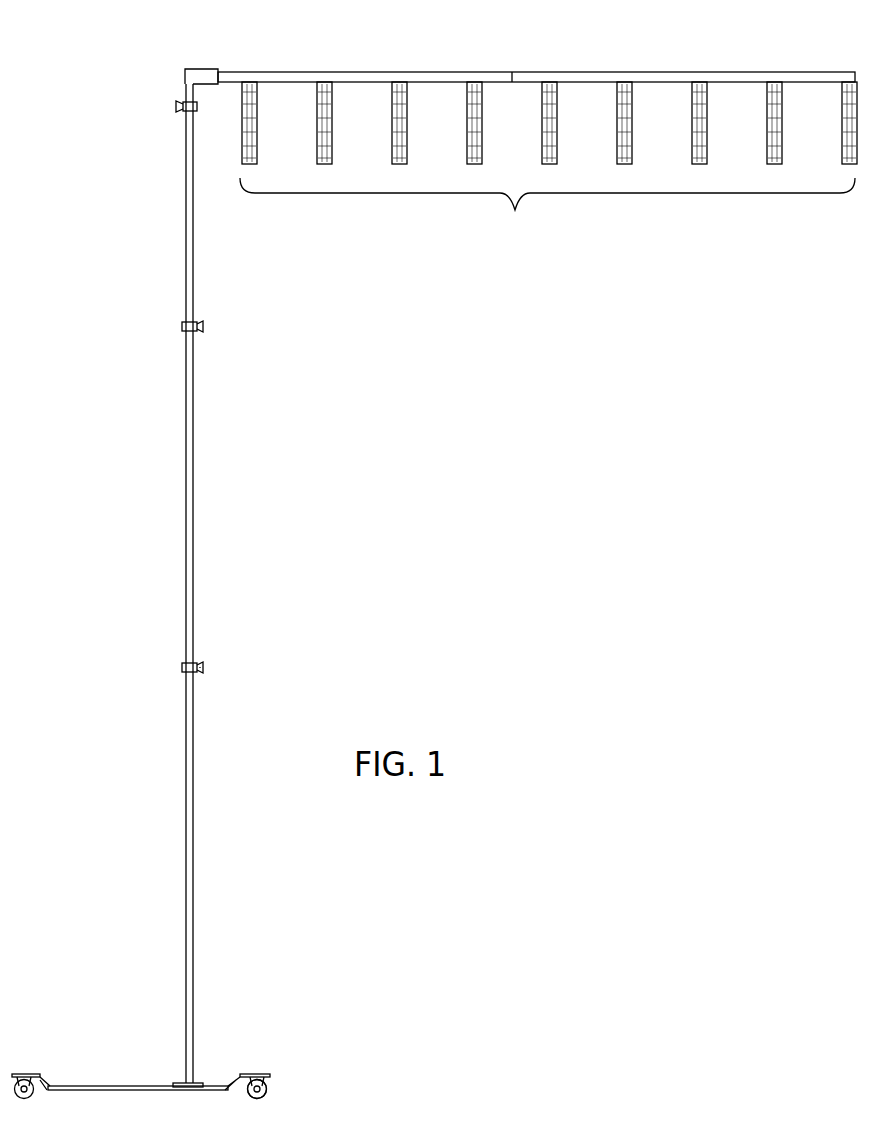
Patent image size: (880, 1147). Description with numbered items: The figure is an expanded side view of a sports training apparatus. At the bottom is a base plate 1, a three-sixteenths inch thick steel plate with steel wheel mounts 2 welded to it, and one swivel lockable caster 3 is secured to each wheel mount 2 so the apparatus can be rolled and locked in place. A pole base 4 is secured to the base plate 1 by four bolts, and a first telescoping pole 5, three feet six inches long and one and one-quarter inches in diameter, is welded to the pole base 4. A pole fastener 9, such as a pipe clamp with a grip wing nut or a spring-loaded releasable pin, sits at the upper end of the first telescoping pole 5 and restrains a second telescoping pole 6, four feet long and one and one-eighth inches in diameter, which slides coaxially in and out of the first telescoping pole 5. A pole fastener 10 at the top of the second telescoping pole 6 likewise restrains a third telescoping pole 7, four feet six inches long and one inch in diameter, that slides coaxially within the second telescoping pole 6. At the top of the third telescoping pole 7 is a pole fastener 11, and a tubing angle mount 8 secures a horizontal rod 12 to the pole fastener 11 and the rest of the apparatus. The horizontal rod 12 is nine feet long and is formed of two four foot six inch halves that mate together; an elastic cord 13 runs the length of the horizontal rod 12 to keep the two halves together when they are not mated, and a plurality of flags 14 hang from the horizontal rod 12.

The base plate 1 is at (78, 1085).
The wheel mount 2 is at (248, 1073).
The swivel lockable caster 3 is at (267, 1092).
The pole base 4 is at (182, 1084).
The first telescoping pole 5 is at (194, 870).
The second telescoping pole 6 is at (194, 498).
The third telescoping pole 7 is at (184, 233).
The tubing angle mount 8 is at (198, 68).
The pole fastener 9 is at (203, 665).
The pole fastener 10 is at (203, 323).
The pole fastener 11 is at (175, 106).
The horizontal rod 12 is at (327, 71).
The elastic cord 13 is at (445, 75).
The flags 14 is at (547, 210).